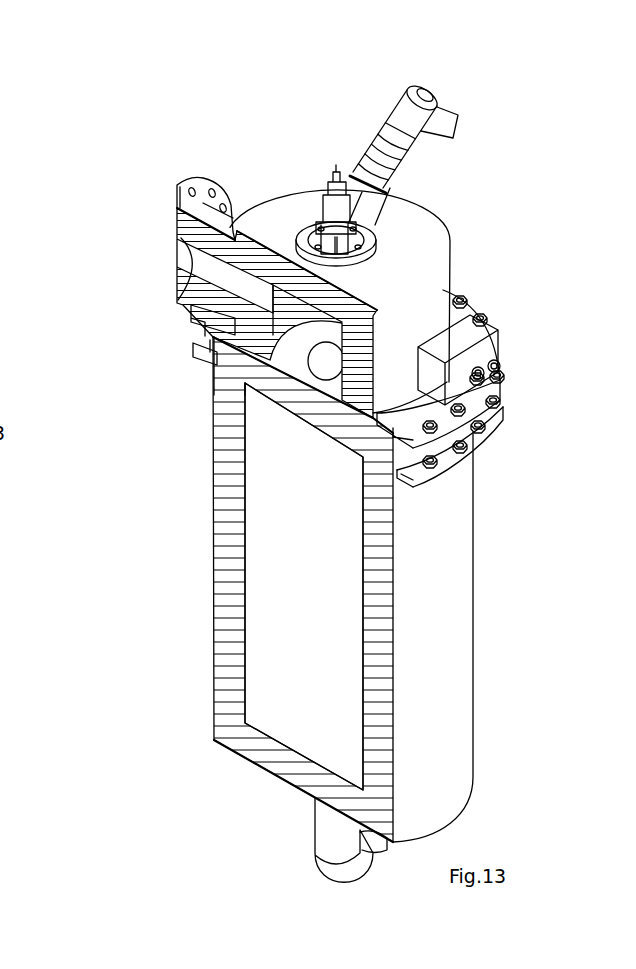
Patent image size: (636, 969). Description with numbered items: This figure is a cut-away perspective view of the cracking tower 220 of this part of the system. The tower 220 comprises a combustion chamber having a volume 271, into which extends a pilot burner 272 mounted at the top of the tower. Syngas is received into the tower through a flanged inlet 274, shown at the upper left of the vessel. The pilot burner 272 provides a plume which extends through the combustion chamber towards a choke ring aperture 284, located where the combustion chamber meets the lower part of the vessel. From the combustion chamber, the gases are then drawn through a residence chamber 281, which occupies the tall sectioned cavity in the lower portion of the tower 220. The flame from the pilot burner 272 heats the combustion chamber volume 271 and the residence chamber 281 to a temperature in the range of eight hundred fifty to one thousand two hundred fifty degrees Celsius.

The tower 220 is at (555, 159).
The volume 271 is at (347, 303).
The pilot burner 272 is at (388, 111).
The flanged inlet 274 is at (175, 220).
The residence chamber 281 is at (292, 559).
The choke ring aperture 284 is at (237, 388).